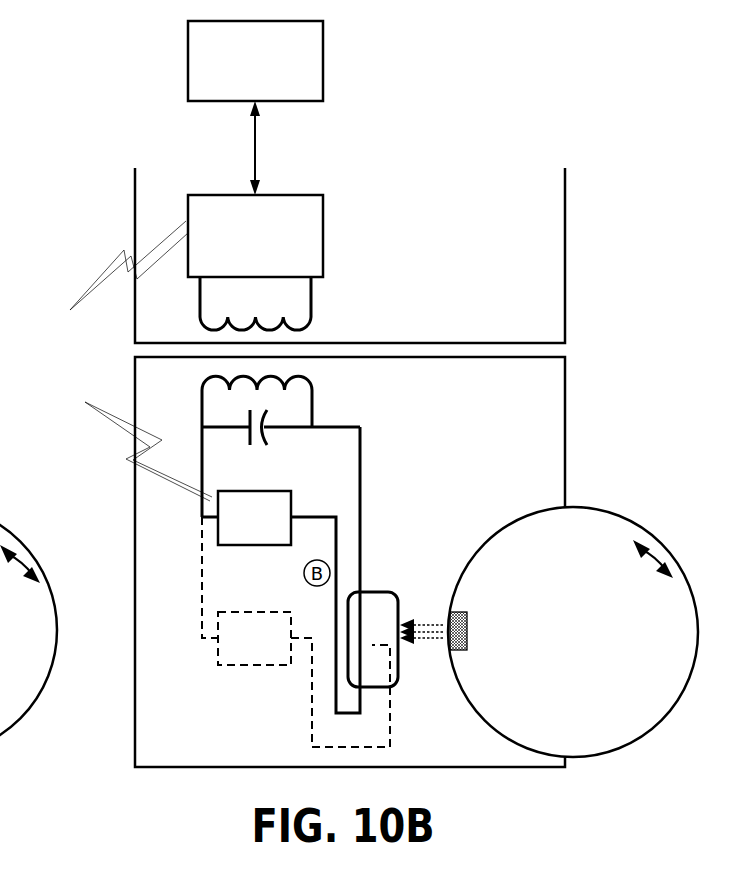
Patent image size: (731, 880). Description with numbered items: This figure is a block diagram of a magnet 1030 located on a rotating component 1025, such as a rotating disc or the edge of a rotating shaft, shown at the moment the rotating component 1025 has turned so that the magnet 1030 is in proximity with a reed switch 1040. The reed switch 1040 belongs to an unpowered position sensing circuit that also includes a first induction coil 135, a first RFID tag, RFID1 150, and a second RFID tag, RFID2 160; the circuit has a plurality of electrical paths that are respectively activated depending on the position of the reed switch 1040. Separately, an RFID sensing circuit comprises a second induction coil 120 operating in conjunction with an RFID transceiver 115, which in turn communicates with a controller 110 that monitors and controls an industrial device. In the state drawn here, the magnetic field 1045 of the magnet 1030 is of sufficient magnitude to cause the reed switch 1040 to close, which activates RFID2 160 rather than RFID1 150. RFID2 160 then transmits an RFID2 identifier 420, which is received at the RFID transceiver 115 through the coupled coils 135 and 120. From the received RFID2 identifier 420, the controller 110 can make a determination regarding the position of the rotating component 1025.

The controller 110 is at (255, 61).
The RFID transceiver 115 is at (255, 236).
The second induction coil 120 is at (200, 303).
The first induction coil 135 is at (202, 407).
The RFID2 160 is at (254, 518).
The RFID1 150 is at (296, 632).
The RFID2 identifier 420 is at (106, 361).
The rotating component 1025 is at (655, 547).
The magnet 1030 is at (462, 651).
The reed switch 1040 is at (397, 600).
The magnetic field 1045 is at (427, 643).